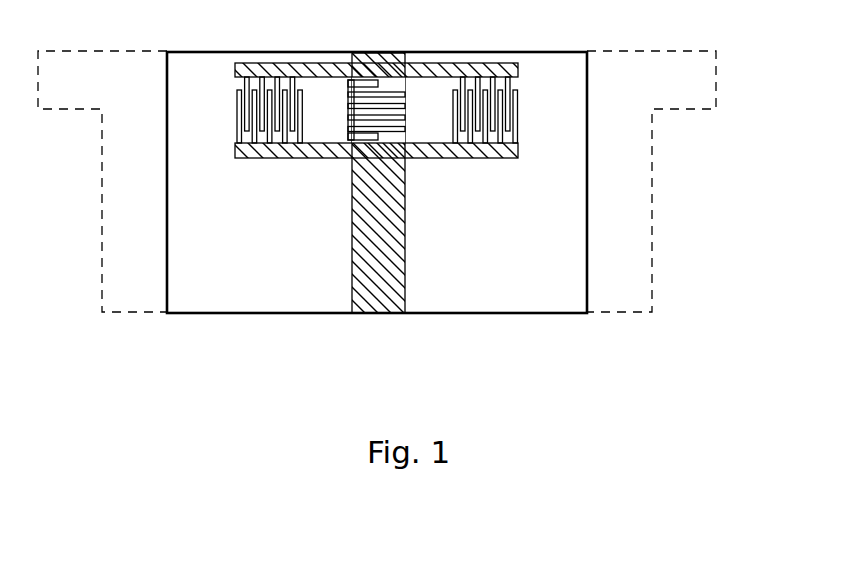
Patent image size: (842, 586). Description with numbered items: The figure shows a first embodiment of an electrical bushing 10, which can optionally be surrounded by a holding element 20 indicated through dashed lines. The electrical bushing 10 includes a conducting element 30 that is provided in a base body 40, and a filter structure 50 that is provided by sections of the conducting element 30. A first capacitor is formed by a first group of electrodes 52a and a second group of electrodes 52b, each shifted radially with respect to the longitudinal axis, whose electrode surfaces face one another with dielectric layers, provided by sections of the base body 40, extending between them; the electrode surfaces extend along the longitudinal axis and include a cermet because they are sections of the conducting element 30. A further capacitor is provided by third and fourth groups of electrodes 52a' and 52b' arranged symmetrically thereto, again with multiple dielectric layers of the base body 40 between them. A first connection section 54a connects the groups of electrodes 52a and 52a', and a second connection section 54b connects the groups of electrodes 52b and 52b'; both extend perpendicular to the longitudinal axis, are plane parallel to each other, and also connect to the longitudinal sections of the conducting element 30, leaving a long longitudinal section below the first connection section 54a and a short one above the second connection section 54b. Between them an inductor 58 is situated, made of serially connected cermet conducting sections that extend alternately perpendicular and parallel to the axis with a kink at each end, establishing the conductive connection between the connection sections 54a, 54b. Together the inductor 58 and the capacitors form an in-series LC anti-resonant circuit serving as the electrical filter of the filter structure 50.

The electrical bushing 10 is at (390, 366).
The holding element 20 is at (102, 211).
The conducting element 30 is at (407, 247).
The base body 40 is at (223, 313).
The filter structure 50 is at (295, 168).
The first group of electrodes 52a is at (239, 116).
The third group of electrodes 52a' is at (514, 116).
The second group of electrodes 52b is at (237, 103).
The fourth group of electrodes 52b' is at (520, 104).
The first connection section 54a is at (462, 158).
The second connection section 54b is at (455, 63).
The inductor 58 is at (407, 103).